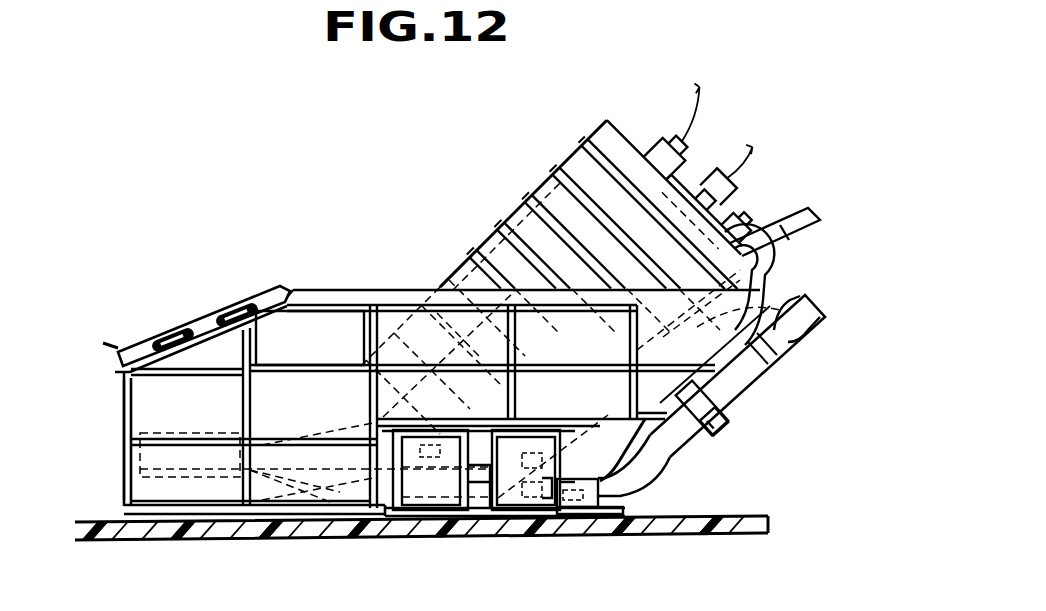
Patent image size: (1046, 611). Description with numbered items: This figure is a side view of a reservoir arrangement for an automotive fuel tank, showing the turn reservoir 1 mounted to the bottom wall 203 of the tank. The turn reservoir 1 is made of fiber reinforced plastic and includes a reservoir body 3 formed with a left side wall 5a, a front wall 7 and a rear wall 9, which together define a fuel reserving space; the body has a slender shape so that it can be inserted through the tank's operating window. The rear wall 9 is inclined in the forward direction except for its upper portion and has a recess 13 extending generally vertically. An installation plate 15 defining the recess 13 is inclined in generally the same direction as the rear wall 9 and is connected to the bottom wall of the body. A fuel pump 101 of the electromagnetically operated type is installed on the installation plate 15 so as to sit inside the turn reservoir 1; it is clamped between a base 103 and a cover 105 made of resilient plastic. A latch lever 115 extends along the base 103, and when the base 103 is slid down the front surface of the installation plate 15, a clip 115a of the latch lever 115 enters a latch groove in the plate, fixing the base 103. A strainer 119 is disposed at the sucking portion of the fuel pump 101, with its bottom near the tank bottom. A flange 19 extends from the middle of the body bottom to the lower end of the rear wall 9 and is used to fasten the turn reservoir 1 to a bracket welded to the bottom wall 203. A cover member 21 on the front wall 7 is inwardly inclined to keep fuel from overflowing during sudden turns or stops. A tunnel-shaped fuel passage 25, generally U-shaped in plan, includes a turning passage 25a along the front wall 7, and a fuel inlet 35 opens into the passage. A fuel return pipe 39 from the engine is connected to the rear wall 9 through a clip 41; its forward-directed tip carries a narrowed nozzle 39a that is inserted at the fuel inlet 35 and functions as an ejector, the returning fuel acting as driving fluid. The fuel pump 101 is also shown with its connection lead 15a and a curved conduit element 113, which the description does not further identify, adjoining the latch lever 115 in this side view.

The turn reservoir 1 is at (310, 289).
The reservoir body 3 is at (328, 334).
The left side wall 5a is at (360, 330).
The front wall 7 is at (124, 408).
The rear wall 9 is at (782, 358).
The recess 13 is at (688, 452).
The installation plate 15 is at (655, 470).
The clip 15a is at (732, 186).
The flange 19 is at (598, 514).
The cover member 21 is at (215, 312).
The fuel passage 25 is at (178, 456).
The turning passage 25a is at (263, 472).
The fuel inlet 35 is at (490, 517).
The fuel return pipe 39 is at (747, 395).
The nozzle 39a is at (538, 512).
The clip 41 is at (735, 424).
The fuel pump 101 is at (622, 135).
The base 103 is at (750, 223).
The cover 105 is at (557, 167).
The curved hose 113 is at (772, 268).
The latch lever 115 is at (814, 219).
The clip 115a is at (812, 313).
The strainer 119 is at (283, 492).
The bottom wall 203 is at (735, 540).